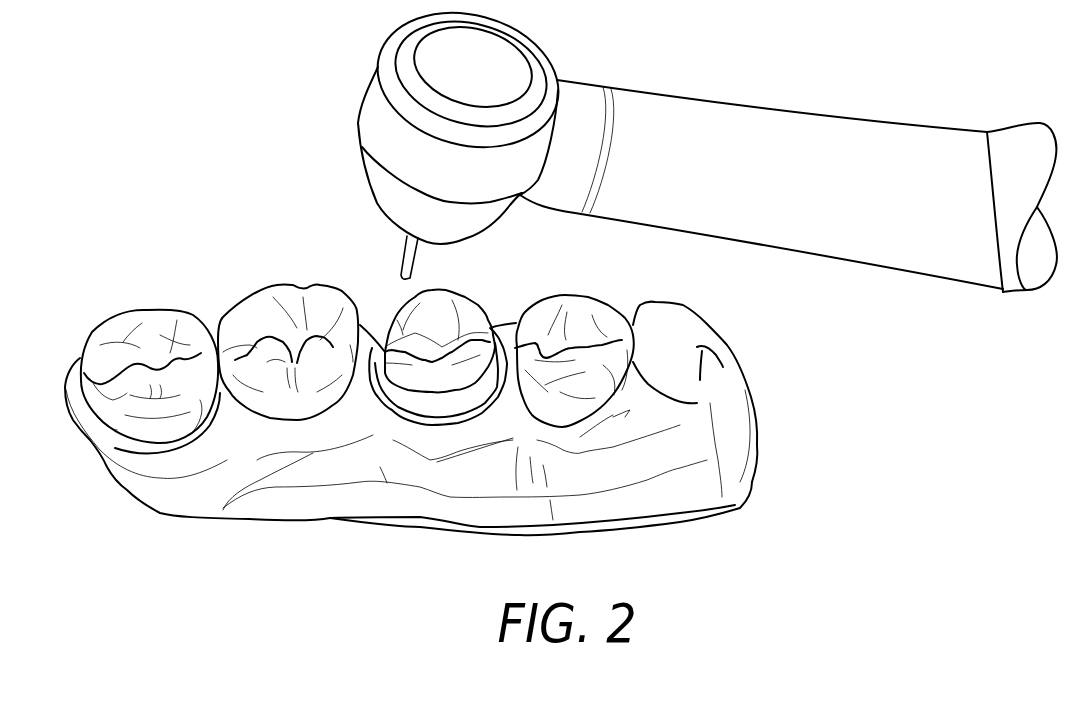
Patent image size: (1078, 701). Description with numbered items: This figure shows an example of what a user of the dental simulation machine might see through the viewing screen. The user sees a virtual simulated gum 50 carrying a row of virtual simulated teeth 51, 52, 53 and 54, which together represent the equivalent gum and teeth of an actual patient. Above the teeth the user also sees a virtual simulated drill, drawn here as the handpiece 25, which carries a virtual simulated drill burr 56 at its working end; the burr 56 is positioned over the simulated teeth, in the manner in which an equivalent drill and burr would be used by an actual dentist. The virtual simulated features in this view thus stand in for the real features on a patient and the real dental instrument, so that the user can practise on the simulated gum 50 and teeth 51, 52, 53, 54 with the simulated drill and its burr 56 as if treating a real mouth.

The dental handpiece 25 is at (762, 120).
The virtual simulated drill burr 56 is at (402, 279).
The virtual simulated gum 50 is at (648, 510).
The virtual simulated tooth 51 is at (138, 325).
The virtual simulated tooth 52 is at (262, 305).
The virtual simulated tooth 53 is at (467, 301).
The virtual simulated tooth 54 is at (585, 308).